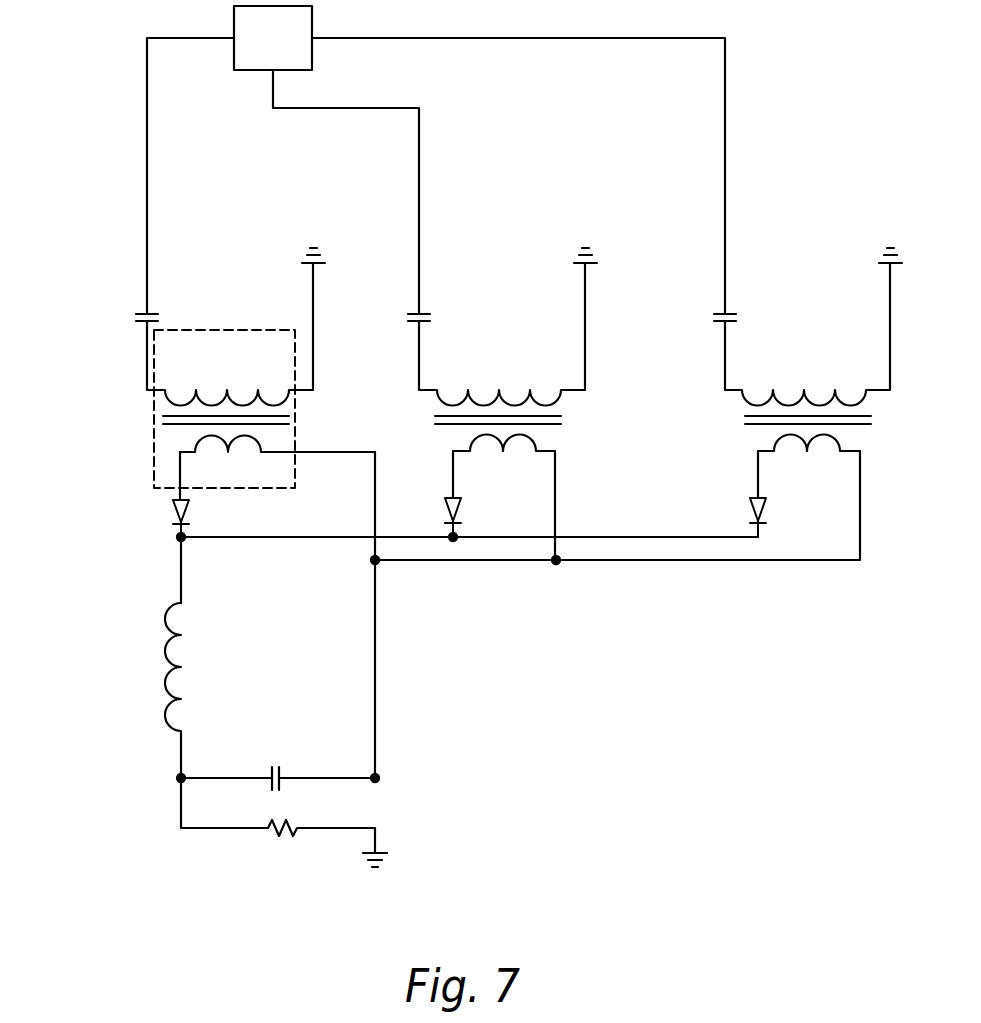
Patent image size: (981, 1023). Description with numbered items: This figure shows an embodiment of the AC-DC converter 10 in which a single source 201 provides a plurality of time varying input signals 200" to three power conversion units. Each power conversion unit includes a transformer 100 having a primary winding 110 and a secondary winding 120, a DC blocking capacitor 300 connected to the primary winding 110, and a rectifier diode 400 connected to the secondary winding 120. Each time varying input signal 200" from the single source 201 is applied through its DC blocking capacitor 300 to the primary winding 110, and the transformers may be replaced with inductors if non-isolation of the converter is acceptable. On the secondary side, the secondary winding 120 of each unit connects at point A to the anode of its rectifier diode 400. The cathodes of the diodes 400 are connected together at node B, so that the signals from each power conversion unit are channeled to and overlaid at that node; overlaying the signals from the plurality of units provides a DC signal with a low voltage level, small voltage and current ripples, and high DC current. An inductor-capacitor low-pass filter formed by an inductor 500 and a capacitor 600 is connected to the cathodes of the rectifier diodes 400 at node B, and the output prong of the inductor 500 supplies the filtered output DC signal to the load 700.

The AC-DC converter 10 is at (873, 47).
The single source 201 is at (292, 53).
The time varying input signals 200 is at (147, 150).
The DC blocking capacitor 300 is at (138, 318).
The transformer 100 is at (504, 383).
The primary winding 110 is at (211, 402).
The secondary winding 120 is at (214, 437).
The point A is at (179, 452).
The rectifier diode 400 is at (178, 510).
The node B is at (183, 540).
The inductor 500 is at (166, 650).
The capacitor 600 is at (272, 766).
The load 700 is at (278, 834).